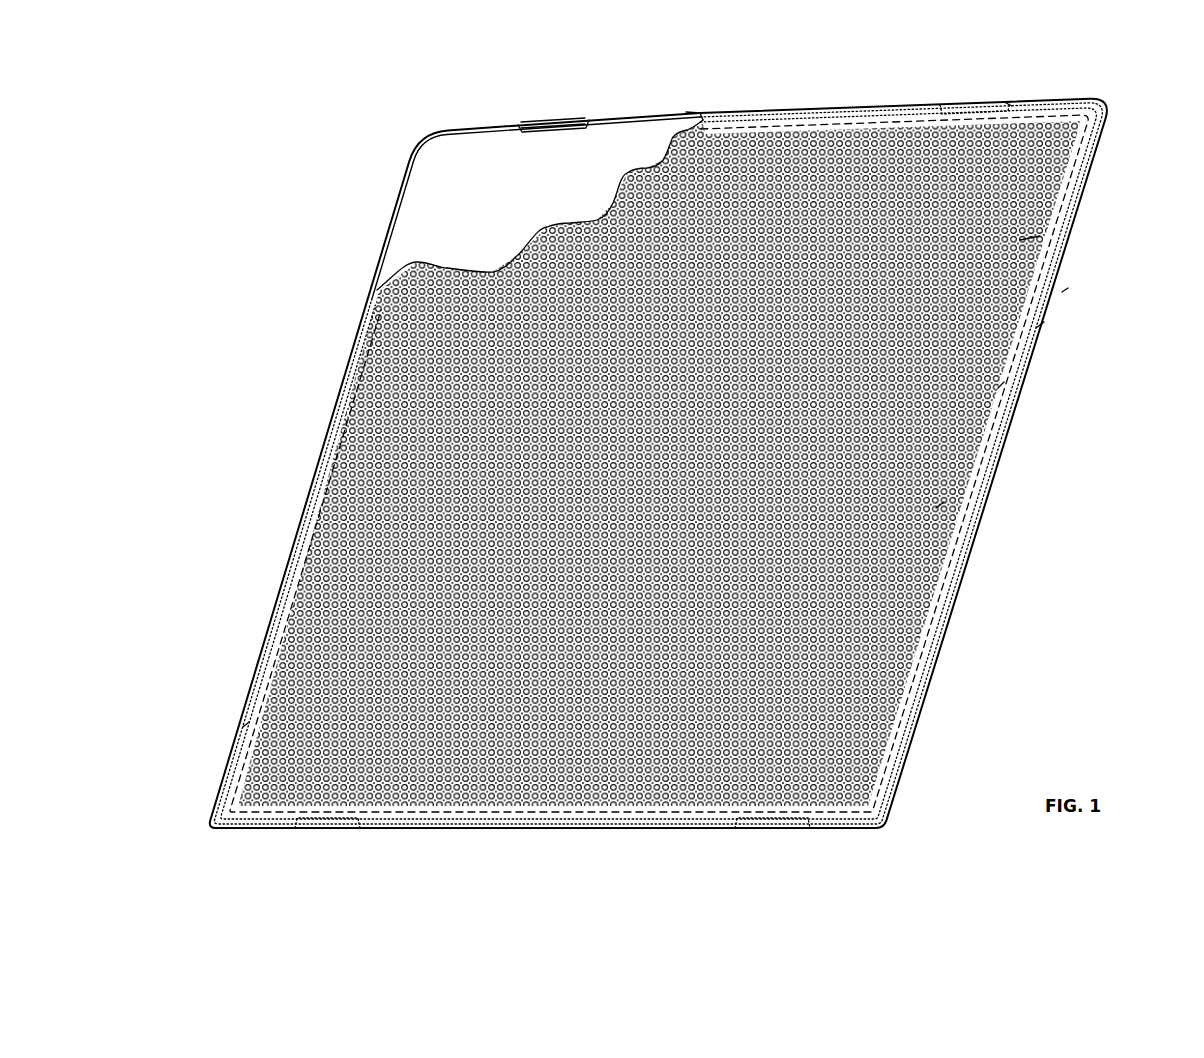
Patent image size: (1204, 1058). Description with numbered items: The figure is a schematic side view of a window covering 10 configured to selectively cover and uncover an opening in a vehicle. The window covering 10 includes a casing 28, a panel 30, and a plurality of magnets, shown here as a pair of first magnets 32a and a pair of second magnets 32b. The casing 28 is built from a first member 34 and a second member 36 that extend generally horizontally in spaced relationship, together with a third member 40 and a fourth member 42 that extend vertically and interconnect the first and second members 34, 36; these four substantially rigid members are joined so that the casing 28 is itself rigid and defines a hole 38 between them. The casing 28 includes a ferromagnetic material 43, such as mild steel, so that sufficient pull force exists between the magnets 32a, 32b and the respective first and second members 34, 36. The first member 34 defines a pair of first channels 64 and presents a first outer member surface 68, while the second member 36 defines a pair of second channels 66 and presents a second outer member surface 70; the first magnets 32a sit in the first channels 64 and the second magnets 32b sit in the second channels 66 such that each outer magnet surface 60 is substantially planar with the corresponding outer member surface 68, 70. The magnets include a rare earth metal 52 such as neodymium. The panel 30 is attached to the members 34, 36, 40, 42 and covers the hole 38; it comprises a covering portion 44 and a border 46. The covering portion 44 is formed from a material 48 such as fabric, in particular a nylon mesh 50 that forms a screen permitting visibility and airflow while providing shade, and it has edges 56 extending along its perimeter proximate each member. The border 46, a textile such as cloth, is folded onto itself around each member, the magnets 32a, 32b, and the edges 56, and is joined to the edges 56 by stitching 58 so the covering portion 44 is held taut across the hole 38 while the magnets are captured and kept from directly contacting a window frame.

The window covering 10 is at (302, 213).
The casing 28 is at (703, 116).
The panel 30 is at (840, 155).
The first magnets 32a is at (562, 118).
The second magnets 32b is at (325, 823).
The first member 34 is at (690, 111).
The second member 36 is at (462, 820).
The hole 38 is at (430, 184).
The third member 40 is at (298, 525).
The fourth member 42 is at (1065, 290).
The ferromagnetic material 43 is at (445, 131).
The covering portion 44 is at (1020, 240).
The border 46 is at (1040, 325).
The material 48 is at (1000, 385).
The nylon mesh 50 is at (940, 505).
The rare earth metal 52 is at (549, 122).
The edges 56 is at (762, 160).
The stitching 58 is at (245, 725).
The outer magnet surface 60 is at (588, 119).
The first channels 64 is at (512, 123).
The second channels 66 is at (293, 835).
The first outer member surface 68 is at (666, 107).
The second outer member surface 70 is at (242, 834).